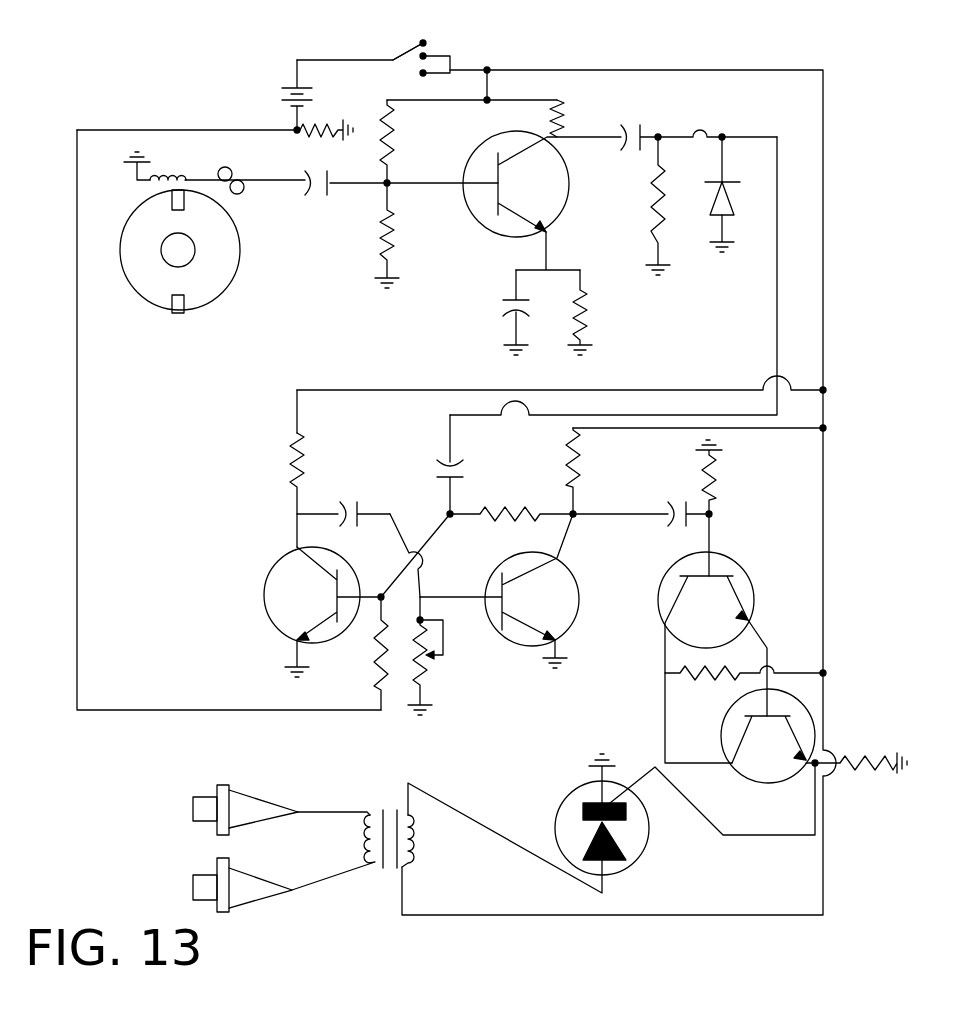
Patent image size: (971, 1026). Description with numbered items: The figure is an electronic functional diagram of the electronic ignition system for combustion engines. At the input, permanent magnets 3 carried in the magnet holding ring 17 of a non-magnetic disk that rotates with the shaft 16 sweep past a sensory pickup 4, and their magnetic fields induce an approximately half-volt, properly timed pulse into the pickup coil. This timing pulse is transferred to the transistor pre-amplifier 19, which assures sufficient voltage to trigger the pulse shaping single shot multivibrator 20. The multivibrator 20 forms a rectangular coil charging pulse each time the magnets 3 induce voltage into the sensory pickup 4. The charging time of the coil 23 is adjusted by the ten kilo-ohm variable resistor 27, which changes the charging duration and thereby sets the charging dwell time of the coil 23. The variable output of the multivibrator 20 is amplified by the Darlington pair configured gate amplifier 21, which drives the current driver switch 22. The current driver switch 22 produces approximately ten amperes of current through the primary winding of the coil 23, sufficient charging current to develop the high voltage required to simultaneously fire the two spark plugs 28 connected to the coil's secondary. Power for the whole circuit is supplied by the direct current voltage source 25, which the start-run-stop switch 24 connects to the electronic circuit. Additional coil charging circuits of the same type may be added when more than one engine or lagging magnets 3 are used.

The magnet 3 is at (172, 200).
The sensory pickup 4 is at (170, 175).
The shaft 16 is at (182, 255).
The magnet holding ring 17 is at (212, 253).
The transistor pre-amplifier 19 is at (568, 220).
The single shot multivibrator 20 is at (420, 513).
The Darlington pair configured gate amplifier 21 is at (708, 661).
The current driver switch 22 is at (562, 798).
The coil 23 is at (385, 870).
The start-run-stop switch 24 is at (450, 52).
The direct current voltage source 25 is at (285, 80).
The variable resistor 27 is at (450, 668).
The spark plugs 28 is at (185, 810).